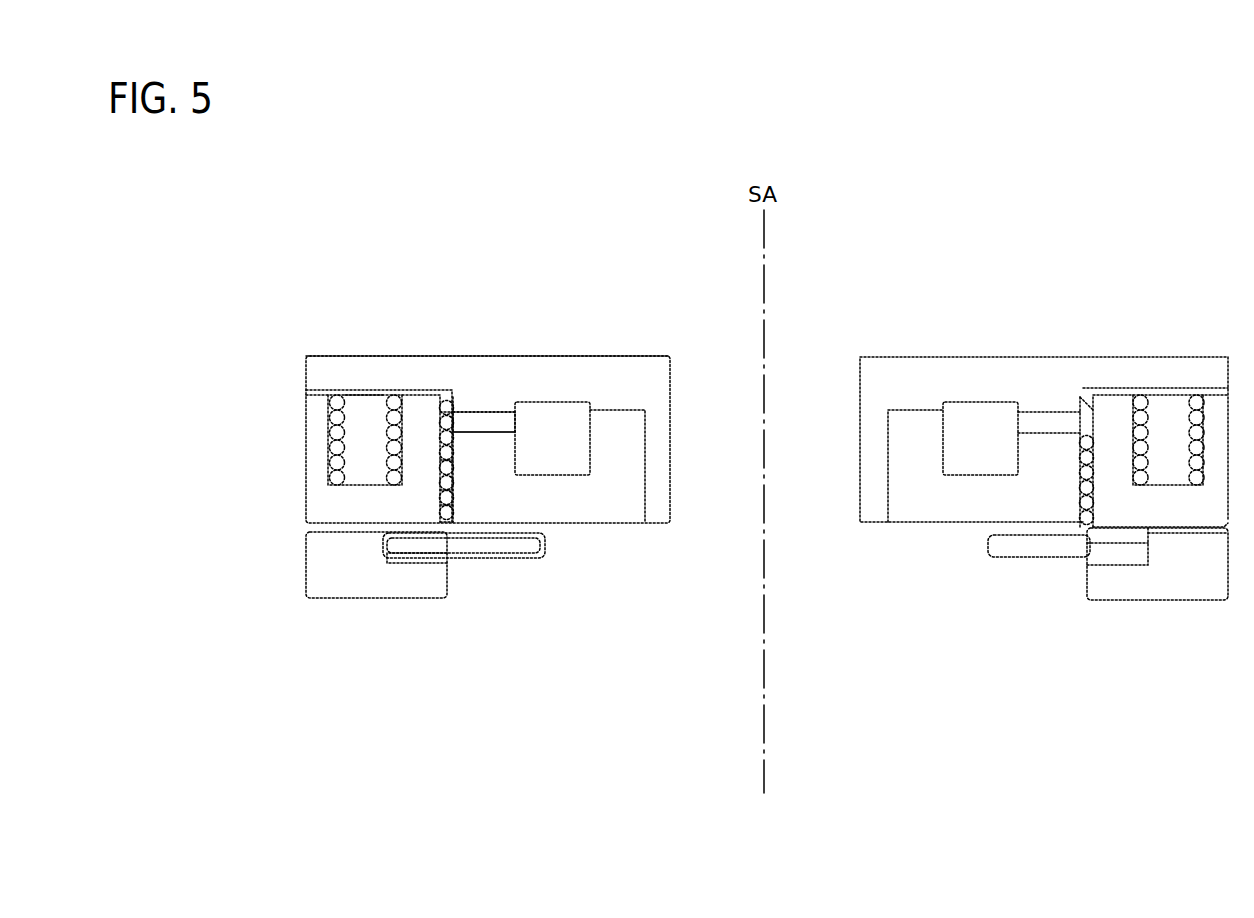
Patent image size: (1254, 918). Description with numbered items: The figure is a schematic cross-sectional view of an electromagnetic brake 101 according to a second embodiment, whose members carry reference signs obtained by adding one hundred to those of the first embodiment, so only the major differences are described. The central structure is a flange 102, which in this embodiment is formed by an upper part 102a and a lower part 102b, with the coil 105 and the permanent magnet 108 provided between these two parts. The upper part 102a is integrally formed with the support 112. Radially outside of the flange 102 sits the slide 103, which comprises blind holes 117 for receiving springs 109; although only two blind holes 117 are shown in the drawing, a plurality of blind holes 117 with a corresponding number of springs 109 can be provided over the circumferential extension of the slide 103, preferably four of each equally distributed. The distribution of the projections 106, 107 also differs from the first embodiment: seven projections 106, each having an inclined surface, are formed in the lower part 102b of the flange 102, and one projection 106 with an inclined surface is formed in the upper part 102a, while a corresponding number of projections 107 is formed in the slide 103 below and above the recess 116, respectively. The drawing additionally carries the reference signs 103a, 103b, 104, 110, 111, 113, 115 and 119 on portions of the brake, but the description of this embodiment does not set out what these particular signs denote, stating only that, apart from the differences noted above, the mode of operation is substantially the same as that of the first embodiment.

The electromagnetic brake 101 is at (453, 438).
The flange 102 is at (630, 542).
The upper part 102a is at (656, 350).
The lower part 102b is at (603, 513).
The slide 103 is at (322, 410).
The first coil portion 103a is at (433, 400).
The second coil portion 103b is at (432, 515).
The armature 104 is at (456, 493).
The coil 105 is at (573, 475).
The projections 106 is at (453, 447).
The projections 107 is at (443, 462).
The permanent magnet 108 is at (502, 422).
The springs 109 is at (336, 402).
The base block 110 is at (425, 545).
The shaft 111 is at (397, 548).
The support 112 is at (364, 368).
The spring 113 is at (445, 505).
The guide 115 is at (443, 507).
The recess 116 is at (442, 415).
The blind holes 117 is at (359, 418).
The terminal 119 is at (450, 425).